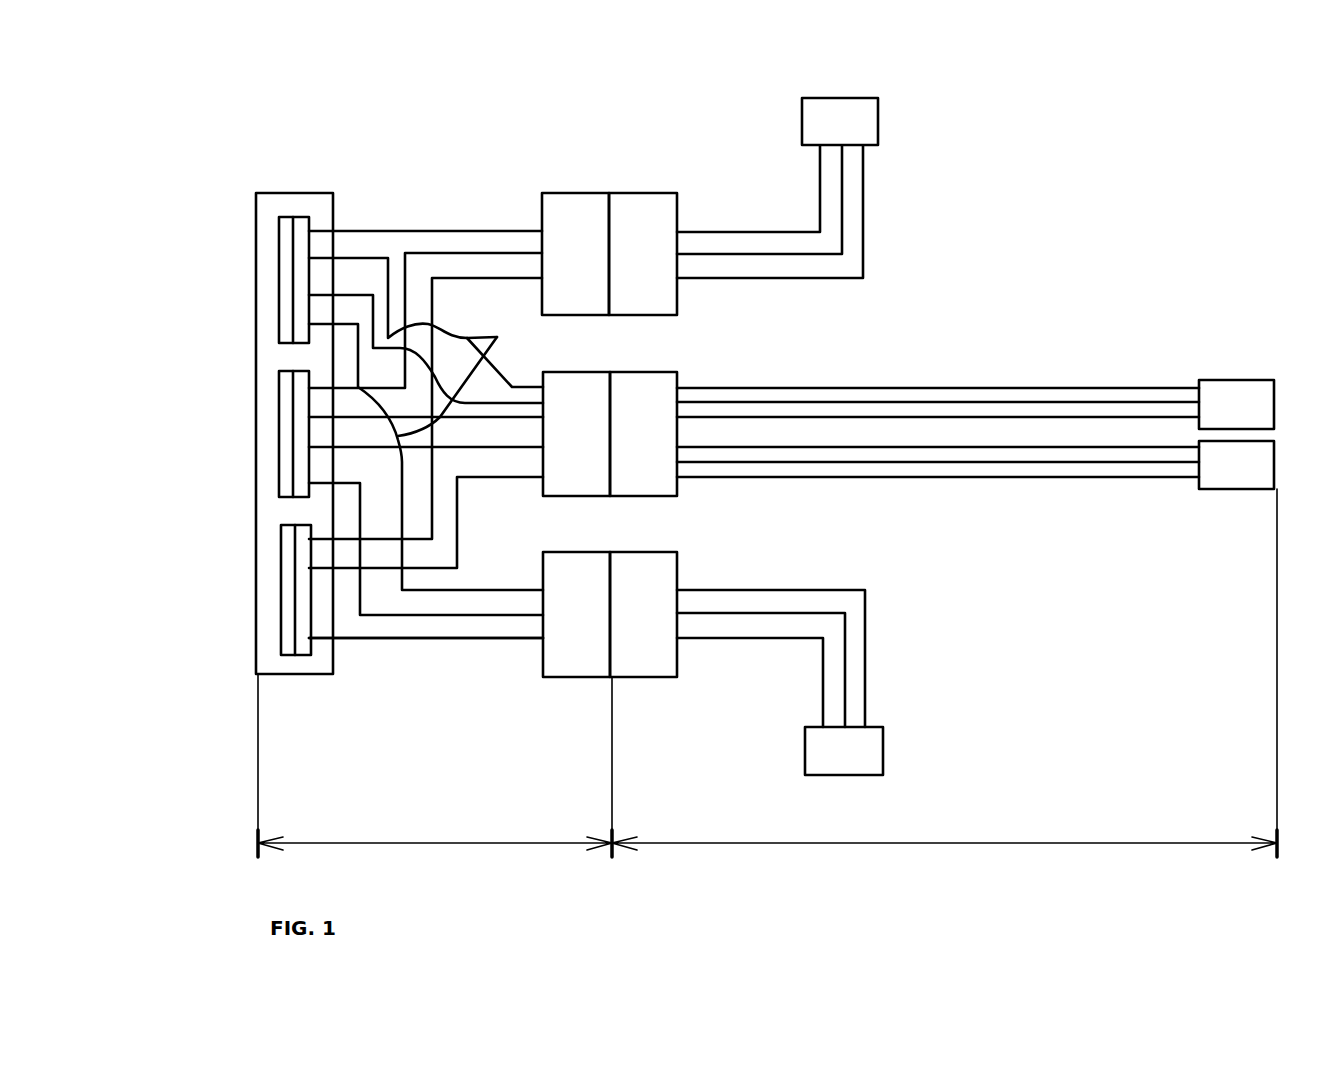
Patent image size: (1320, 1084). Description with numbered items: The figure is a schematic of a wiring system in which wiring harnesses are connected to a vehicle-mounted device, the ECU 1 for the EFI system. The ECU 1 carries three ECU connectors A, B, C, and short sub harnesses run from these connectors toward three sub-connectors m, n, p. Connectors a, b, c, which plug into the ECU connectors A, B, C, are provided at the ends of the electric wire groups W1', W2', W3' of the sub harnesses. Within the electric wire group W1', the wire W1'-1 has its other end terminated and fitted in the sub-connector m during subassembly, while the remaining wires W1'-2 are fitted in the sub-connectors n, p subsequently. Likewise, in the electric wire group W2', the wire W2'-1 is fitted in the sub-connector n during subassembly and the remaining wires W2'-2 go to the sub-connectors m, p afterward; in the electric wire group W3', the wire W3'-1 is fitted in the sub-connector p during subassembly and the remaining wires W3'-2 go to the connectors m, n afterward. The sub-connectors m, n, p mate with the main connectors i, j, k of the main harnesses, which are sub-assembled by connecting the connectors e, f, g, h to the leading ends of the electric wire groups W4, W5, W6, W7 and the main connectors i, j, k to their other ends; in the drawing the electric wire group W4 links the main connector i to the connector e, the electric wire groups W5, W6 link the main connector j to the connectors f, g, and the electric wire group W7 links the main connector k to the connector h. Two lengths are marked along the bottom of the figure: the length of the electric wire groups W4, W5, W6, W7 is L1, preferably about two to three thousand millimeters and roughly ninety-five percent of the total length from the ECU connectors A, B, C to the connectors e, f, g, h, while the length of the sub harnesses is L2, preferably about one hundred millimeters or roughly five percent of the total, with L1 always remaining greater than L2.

The ECU 1 is at (277, 192).
The ECU connector A is at (277, 282).
The connector a is at (303, 216).
The ECU connector B is at (277, 428).
The connector b is at (297, 495).
The ECU connector C is at (277, 588).
The connector c is at (307, 653).
The electric wire group W1' is at (403, 206).
The wire W1'-1 is at (442, 159).
The remaining wires W1'-2 is at (438, 365).
The electric wire group W2' is at (350, 471).
The wire W2'-1 is at (426, 469).
The remaining wires W2'-2 is at (435, 610).
The electric wire group W3' is at (352, 434).
The wire W3'-1 is at (426, 701).
The remaining wires W3'-2 is at (437, 522).
The sub-connector m is at (588, 205).
The sub-connector n is at (588, 390).
The sub-connector p is at (588, 578).
The main connector i is at (652, 213).
The main connector j is at (655, 393).
The main connector k is at (667, 570).
The electric wire group W4 is at (865, 218).
The electric wire group W5 is at (1023, 385).
The electric wire group W6 is at (1080, 479).
The electric wire group W7 is at (868, 653).
The connector e is at (880, 113).
The connector f is at (1242, 378).
The connector g is at (1237, 492).
The connector h is at (883, 753).
The length of electric wire groups L1 is at (435, 765).
The length of sub harnesses L2 is at (944, 673).